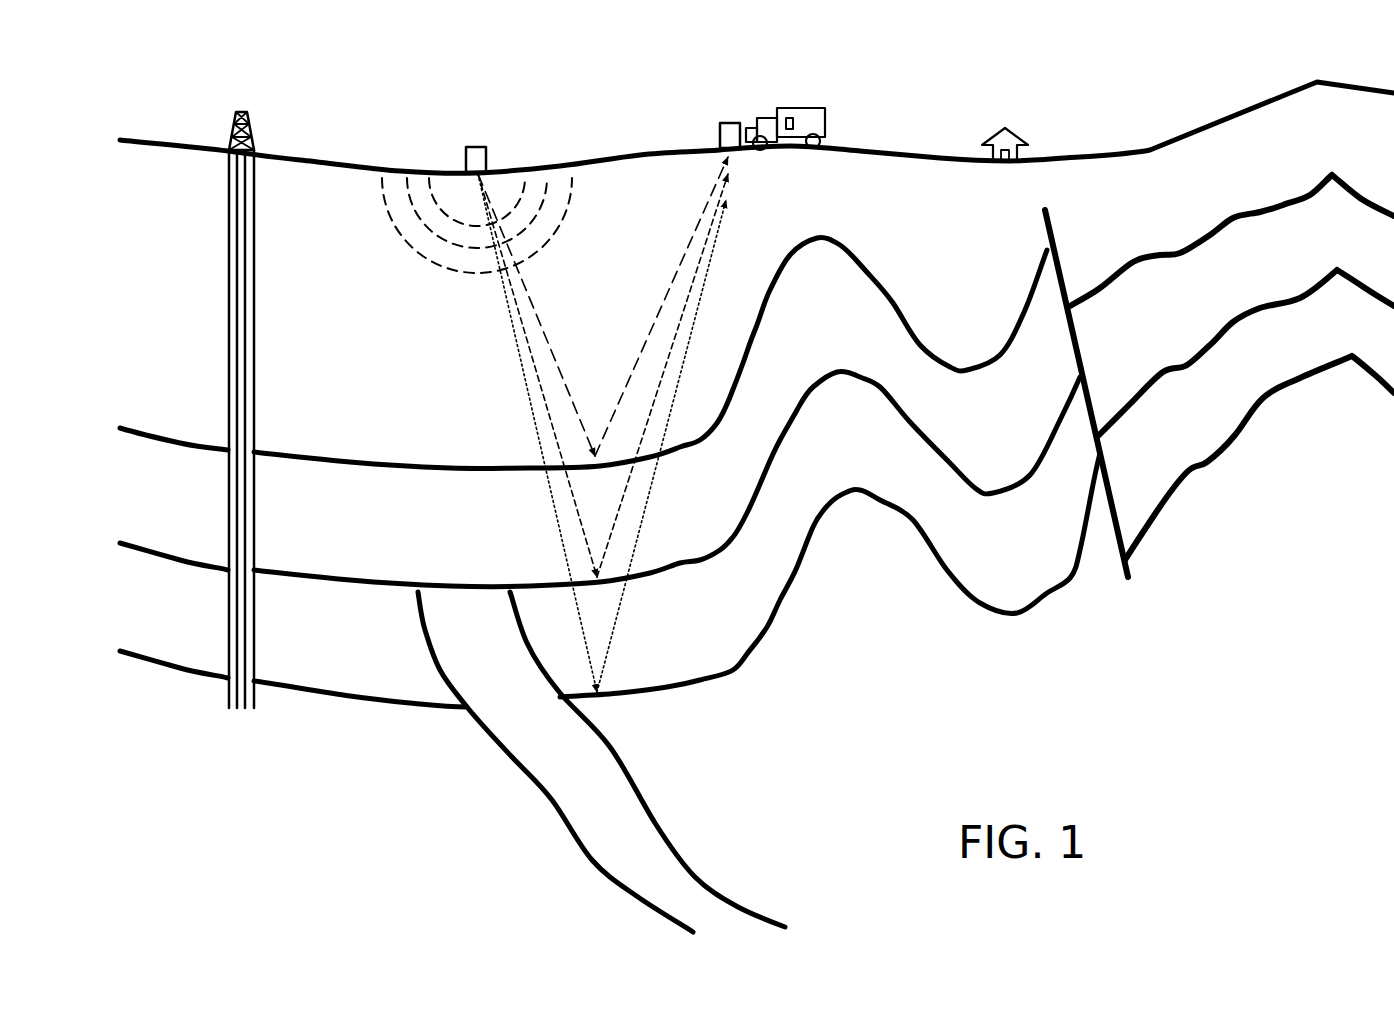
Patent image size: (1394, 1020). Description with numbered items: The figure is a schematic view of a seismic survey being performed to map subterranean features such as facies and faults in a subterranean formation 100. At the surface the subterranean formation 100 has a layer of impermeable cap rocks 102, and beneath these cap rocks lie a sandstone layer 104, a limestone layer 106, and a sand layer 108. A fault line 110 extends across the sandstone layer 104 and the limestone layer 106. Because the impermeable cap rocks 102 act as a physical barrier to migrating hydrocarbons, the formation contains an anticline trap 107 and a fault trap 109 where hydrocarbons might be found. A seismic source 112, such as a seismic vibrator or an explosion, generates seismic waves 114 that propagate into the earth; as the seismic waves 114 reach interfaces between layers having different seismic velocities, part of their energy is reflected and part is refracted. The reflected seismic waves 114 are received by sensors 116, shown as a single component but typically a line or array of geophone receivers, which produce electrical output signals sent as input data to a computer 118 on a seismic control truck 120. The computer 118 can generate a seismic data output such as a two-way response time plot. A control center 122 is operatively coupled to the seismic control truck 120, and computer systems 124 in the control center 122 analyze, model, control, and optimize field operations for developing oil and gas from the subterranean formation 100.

The subterranean formation 100 is at (1053, 57).
The layer of impermeable cap rocks 102 is at (176, 313).
The sandstone layer 104 is at (359, 534).
The limestone layer 106 is at (176, 616).
The anticline trap 107 is at (847, 282).
The sand layer 108 is at (606, 789).
The fault trap 109 is at (1048, 328).
The fault line 110 is at (1057, 238).
The seismic source 112 is at (477, 146).
The seismic waves 114 is at (392, 219).
The sensors 116 is at (730, 120).
The computer 118 is at (788, 118).
The seismic control truck 120 is at (800, 108).
The control center 122 is at (1028, 145).
The computer systems 124 is at (990, 158).